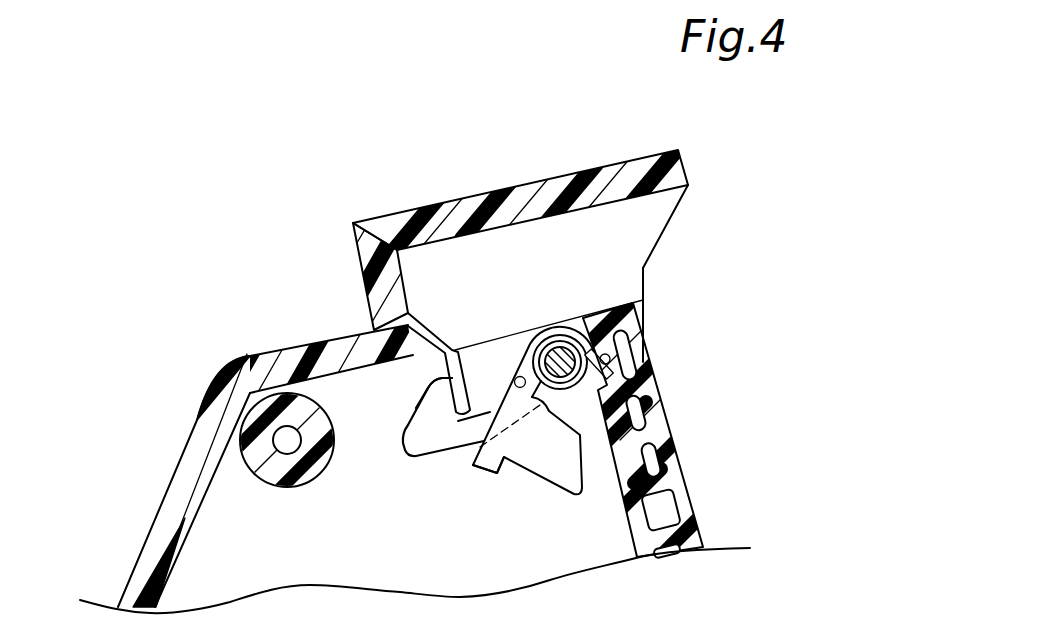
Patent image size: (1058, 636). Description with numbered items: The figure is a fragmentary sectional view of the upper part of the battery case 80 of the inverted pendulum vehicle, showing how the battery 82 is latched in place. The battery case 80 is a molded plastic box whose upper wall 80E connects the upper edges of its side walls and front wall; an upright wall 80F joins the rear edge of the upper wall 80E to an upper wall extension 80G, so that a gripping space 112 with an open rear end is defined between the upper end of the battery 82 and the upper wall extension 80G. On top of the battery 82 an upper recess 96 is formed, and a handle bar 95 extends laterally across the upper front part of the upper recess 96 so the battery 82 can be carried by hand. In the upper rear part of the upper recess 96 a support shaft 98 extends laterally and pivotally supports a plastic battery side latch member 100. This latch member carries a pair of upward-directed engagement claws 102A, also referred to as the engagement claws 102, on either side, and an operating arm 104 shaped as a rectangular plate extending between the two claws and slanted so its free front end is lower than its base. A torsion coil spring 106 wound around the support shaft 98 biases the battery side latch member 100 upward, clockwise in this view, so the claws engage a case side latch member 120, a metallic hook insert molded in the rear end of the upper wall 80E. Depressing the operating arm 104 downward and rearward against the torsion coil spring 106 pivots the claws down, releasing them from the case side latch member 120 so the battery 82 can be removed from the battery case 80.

The battery case 80 is at (163, 534).
The upper wall 80E is at (290, 352).
The upright wall 80F is at (377, 297).
The upper wall extension 80G is at (548, 185).
The battery 82 is at (690, 466).
The handle bar 95 is at (278, 477).
The upper recess 96 is at (401, 567).
The support shaft 98 is at (561, 348).
The battery side latch member 100 is at (556, 478).
The engagement claws 102 is at (436, 452).
The engagement claws 102A is at (447, 404).
The operating arm 104 is at (488, 465).
The torsion coil spring 106 is at (644, 305).
The gripping space 112 is at (592, 242).
The case side latch member 120 is at (443, 340).